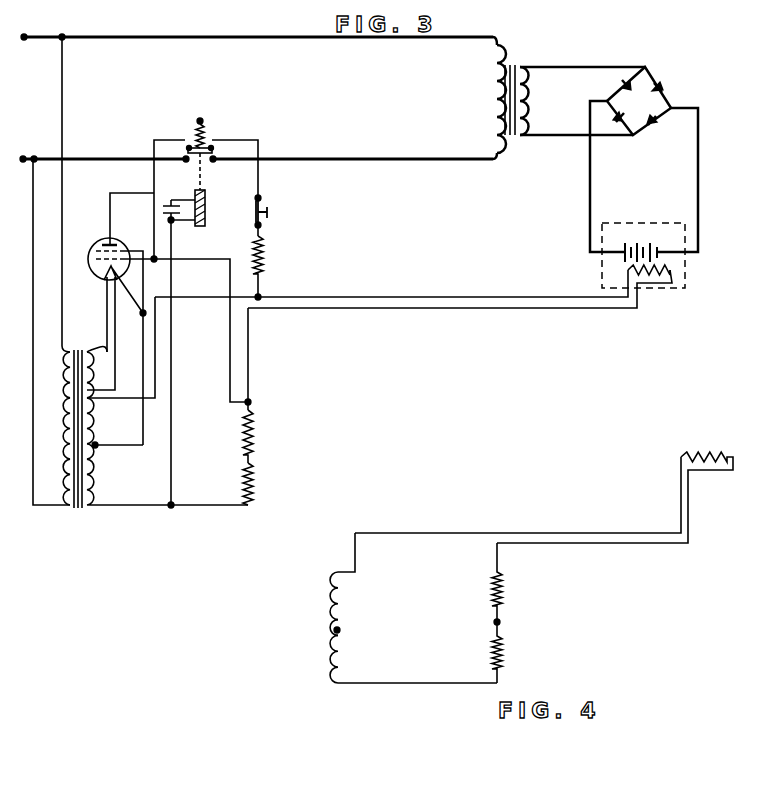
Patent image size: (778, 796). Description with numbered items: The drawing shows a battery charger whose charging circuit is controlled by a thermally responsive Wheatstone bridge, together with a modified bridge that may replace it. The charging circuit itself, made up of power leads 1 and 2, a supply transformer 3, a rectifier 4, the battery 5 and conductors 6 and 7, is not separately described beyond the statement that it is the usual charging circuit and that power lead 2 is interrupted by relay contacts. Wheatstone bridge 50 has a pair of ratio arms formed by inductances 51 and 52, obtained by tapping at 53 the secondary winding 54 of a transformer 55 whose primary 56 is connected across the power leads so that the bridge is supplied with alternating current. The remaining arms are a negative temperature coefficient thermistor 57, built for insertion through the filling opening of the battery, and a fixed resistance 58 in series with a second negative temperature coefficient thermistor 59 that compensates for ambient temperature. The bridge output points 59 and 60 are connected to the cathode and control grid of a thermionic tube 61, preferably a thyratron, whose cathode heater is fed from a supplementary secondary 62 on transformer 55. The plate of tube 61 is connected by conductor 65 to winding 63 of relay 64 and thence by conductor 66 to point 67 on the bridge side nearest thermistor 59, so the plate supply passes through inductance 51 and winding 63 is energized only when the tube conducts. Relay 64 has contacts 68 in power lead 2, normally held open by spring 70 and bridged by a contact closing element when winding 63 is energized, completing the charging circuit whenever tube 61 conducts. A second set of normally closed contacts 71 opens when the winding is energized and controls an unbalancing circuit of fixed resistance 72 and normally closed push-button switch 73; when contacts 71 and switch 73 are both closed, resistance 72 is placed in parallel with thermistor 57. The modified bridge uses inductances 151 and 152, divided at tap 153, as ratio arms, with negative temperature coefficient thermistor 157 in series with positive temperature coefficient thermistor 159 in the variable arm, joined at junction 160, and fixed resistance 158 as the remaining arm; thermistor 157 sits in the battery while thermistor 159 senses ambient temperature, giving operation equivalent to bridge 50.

In FIG. 3, the supply line 1 is at (251, 38).
In FIG. 3, the power lead 2 is at (335, 160).
In FIG. 3, the transformer 3 is at (523, 57).
In FIG. 3, the rectifier bridge 4 is at (639, 101).
In FIG. 3, the battery 5 is at (648, 245).
In FIG. 3, the conductor 6 is at (590, 166).
In FIG. 3, the conductor 7 is at (699, 167).
In FIG. 3, the Wheatstone bridge 50 is at (141, 429).
In FIG. 3, the inductance 51 is at (97, 490).
In FIG. 3, the inductance 52 is at (94, 421).
In FIG. 3, the tap 53 is at (97, 447).
In FIG. 3, the secondary winding 54 is at (96, 513).
In FIG. 3, the transformer 55 is at (76, 517).
In FIG. 3, the primary 56 is at (66, 464).
In FIG. 3, the negative temperature coefficient thermistor 57 is at (650, 288).
In FIG. 3, the fixed resistance 58 is at (254, 434).
In FIG. 3, the second negative temperature coefficient thermistor 59 is at (253, 482).
In FIG. 3, the output point 60 is at (252, 403).
In FIG. 3, the thermionic tube 61 is at (93, 275).
In FIG. 3, the supplementary secondary 62 is at (93, 353).
In FIG. 3, the relay winding 63 is at (205, 222).
In FIG. 3, the relay 64 is at (214, 171).
In FIG. 3, the conductor 65 is at (110, 217).
In FIG. 3, the conductor 66 is at (171, 376).
In FIG. 3, the point 67 is at (171, 505).
In FIG. 3, the contacts 68 is at (185, 159).
In FIG. 3, the spring 70 is at (205, 128).
In FIG. 3, the second set of contacts 71 is at (189, 147).
In FIG. 3, the fixed resistance 72 is at (262, 265).
In FIG. 3, the push-button switch 73 is at (262, 222).
In FIG. 4, the inductance 151 is at (332, 661).
In FIG. 4, the inductance 152 is at (333, 594).
In FIG. 4, the winding tap 153 is at (338, 630).
In FIG. 4, the negative temperature coefficient thermistor 157 is at (708, 457).
In FIG. 4, the fixed resistance 158 is at (500, 655).
In FIG. 4, the positive temperature coefficient thermistor 159 is at (502, 598).
In FIG. 4, the junction 160 is at (497, 622).